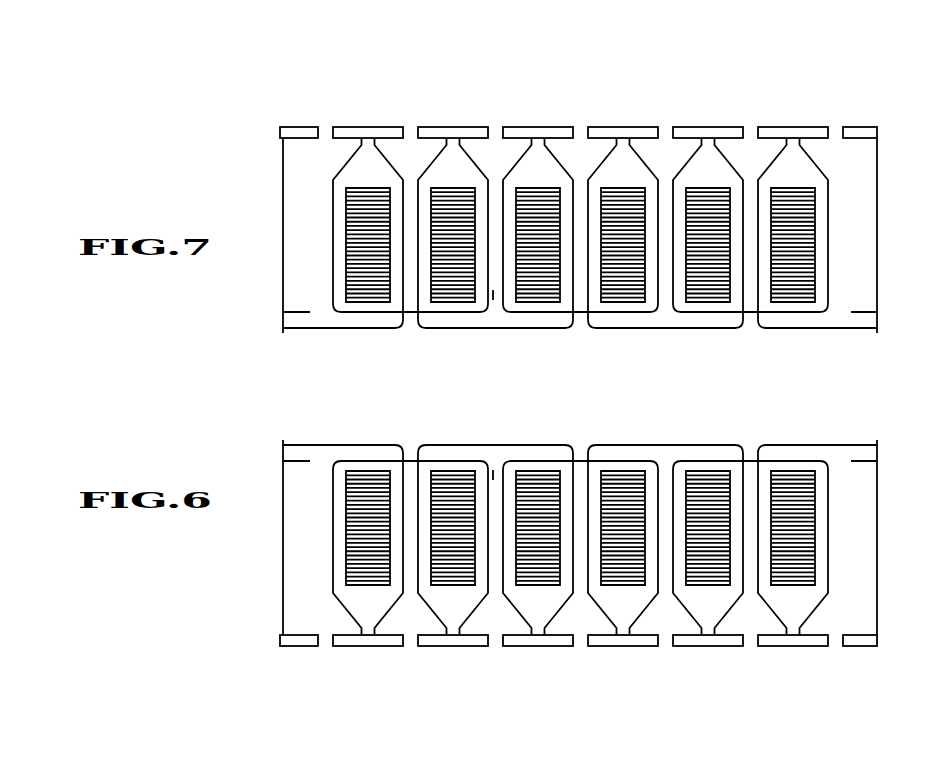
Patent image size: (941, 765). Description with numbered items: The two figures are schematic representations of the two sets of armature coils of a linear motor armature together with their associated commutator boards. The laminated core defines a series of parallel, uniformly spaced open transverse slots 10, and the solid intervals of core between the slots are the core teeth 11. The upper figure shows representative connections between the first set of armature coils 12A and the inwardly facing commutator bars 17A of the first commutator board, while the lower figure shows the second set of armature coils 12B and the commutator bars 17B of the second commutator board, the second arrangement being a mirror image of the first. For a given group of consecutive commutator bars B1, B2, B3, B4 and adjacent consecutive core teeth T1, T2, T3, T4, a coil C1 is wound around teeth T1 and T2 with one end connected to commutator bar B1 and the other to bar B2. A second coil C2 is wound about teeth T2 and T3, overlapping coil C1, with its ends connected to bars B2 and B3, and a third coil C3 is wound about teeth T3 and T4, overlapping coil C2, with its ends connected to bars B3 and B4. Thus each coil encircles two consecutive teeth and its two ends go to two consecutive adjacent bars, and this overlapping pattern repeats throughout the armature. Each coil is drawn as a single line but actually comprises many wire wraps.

In FIG. 7, the transverse slots 10 is at (494, 290).
In FIG. 6, the transverse slots 10 is at (493, 475).
In FIG. 7, the core teeth 11 is at (792, 300).
In FIG. 6, the core teeth 11 is at (702, 472).
In FIG. 7, the first set of armature coils 12A is at (313, 330).
In FIG. 6, the second set of armature coils 12B is at (312, 443).
In FIG. 7, the commutator bars 17A is at (279, 128).
In FIG. 6, the commutator bars 17B is at (298, 647).
In FIG. 7, the commutator bar B1 is at (375, 127).
In FIG. 7, the commutator bar B2 is at (465, 127).
In FIG. 7, the commutator bar B3 is at (550, 127).
In FIG. 7, the commutator bar B4 is at (635, 127).
In FIG. 7, the coil C1 is at (348, 168).
In FIG. 7, the second coil C2 is at (437, 167).
In FIG. 7, the third coil C3 is at (522, 168).
In FIG. 7, the core tooth T1 is at (366, 302).
In FIG. 7, the core tooth T2 is at (455, 302).
In FIG. 7, the core tooth T3 is at (538, 302).
In FIG. 7, the core tooth T4 is at (623, 302).